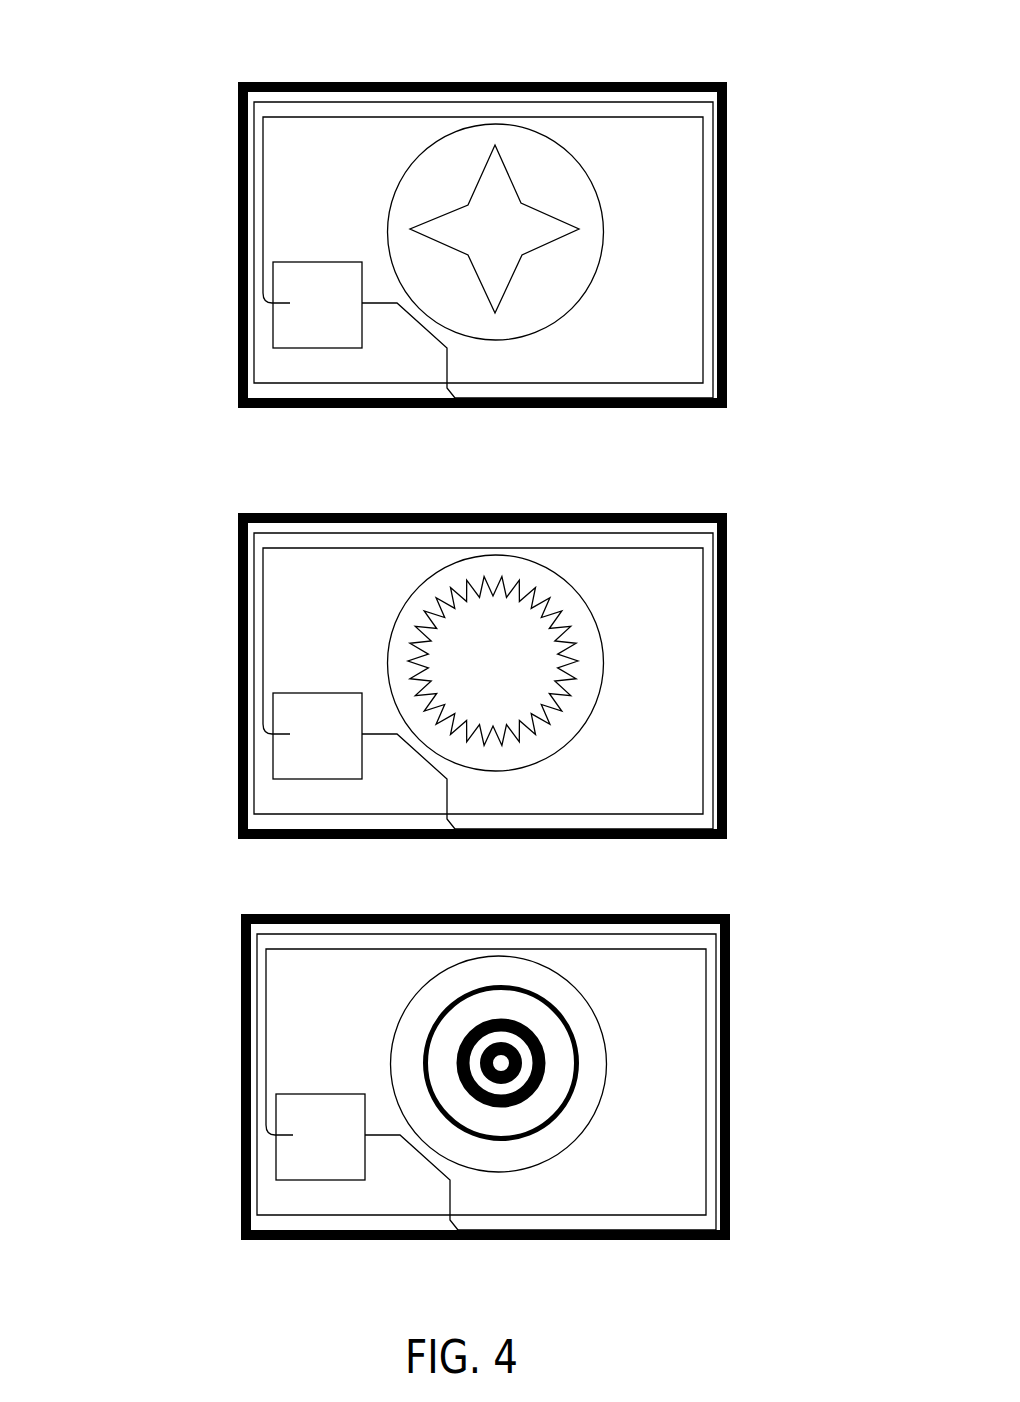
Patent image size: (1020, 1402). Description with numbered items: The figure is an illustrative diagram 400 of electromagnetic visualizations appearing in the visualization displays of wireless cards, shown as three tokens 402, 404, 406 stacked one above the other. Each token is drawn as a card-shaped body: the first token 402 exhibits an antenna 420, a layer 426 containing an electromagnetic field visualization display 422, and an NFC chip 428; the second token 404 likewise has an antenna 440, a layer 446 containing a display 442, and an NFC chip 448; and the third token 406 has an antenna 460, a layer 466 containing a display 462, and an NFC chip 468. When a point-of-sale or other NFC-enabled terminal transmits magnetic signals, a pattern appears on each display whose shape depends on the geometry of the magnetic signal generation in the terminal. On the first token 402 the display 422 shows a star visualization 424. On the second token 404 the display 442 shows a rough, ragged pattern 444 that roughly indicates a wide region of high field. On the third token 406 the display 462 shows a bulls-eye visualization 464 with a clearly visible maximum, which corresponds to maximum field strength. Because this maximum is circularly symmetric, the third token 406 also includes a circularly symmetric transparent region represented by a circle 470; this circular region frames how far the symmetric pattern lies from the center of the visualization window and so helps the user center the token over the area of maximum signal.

The smart card embodiments 400 is at (118, 43).
The token 402 is at (412, 240).
The token 404 is at (482, 639).
The token 406 is at (491, 1087).
The antenna 420 is at (258, 160).
The electromagnetic field visualization display 422 is at (420, 198).
The star visualization pattern 424 is at (496, 198).
The layer 426 is at (667, 322).
The NFC chip 428 is at (310, 298).
The antenna 440 is at (416, 673).
The electromagnetic field visualization display 442 is at (407, 601).
The visualization pattern 444 is at (584, 605).
The layer 446 is at (554, 681).
The NFC chip 448 is at (250, 770).
The antenna 460 is at (432, 1077).
The electromagnetic field visualization display 462 is at (480, 1017).
The bulls-eye visualization pattern 464 is at (651, 985).
The layer 466 is at (486, 1123).
The NFC chip 468 is at (277, 1193).
The circle 470 is at (642, 1063).